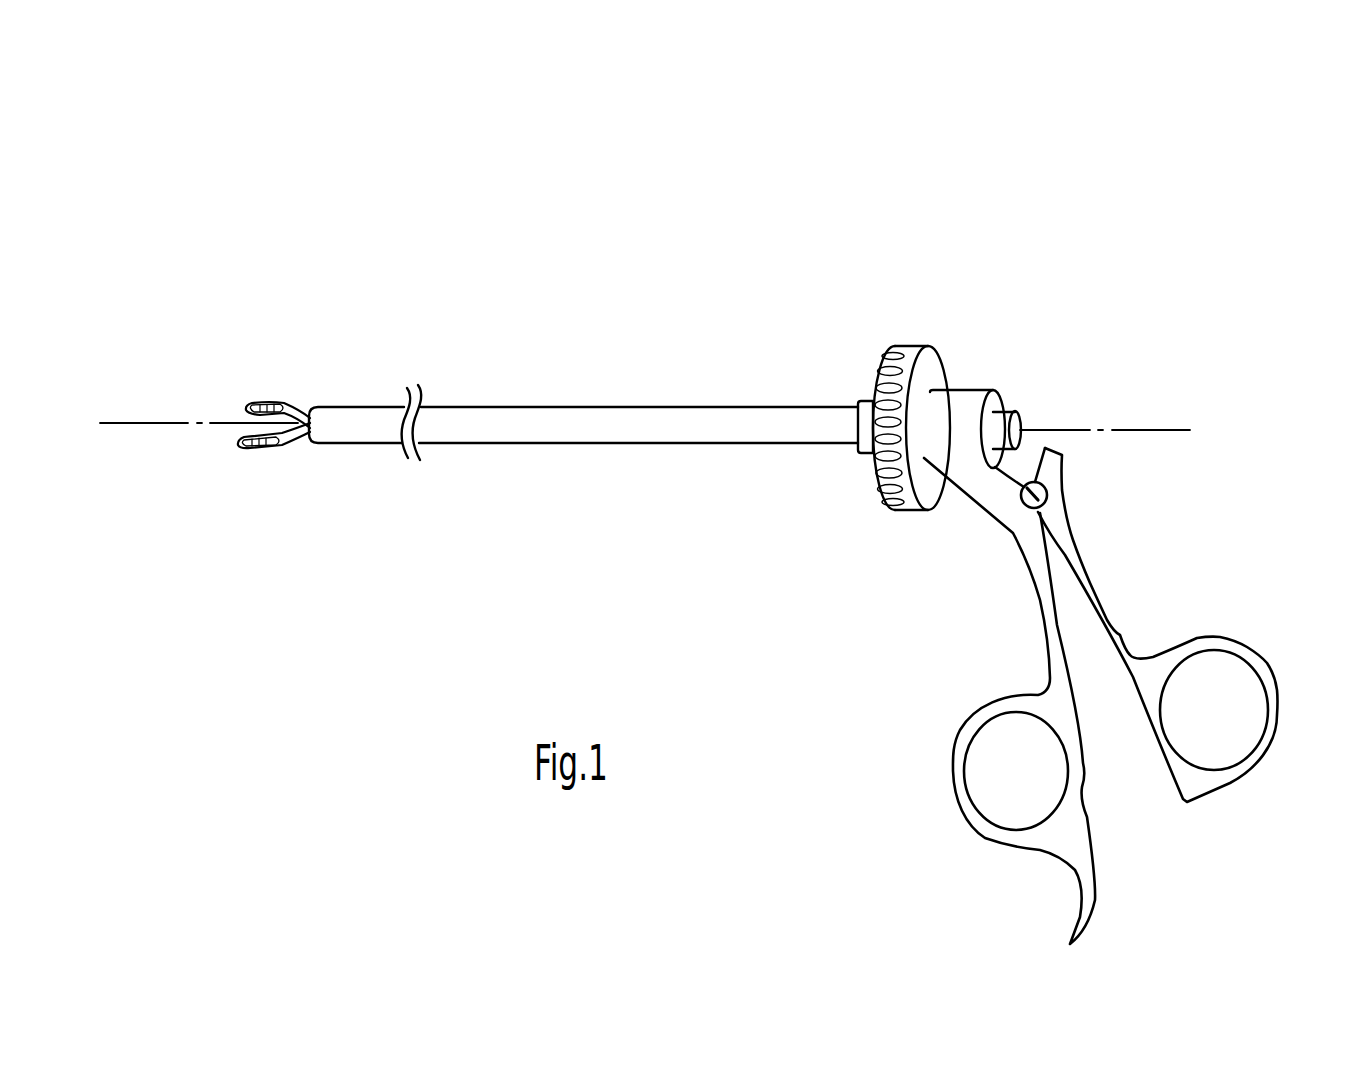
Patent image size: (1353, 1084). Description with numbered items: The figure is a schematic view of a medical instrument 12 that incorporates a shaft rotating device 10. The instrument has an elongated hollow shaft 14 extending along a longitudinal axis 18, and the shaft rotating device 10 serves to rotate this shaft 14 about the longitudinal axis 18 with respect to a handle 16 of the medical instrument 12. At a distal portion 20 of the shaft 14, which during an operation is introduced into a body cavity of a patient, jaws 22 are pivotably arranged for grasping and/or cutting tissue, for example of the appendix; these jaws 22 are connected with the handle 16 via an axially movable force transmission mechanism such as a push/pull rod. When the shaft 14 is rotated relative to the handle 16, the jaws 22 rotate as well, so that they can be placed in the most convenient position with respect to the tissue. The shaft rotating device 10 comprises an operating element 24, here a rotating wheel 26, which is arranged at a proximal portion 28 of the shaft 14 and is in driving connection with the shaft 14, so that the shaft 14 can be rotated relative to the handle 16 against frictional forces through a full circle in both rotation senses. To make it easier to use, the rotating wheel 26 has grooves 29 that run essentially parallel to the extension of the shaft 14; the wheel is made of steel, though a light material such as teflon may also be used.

The shaft rotating device 10 is at (910, 280).
The medical instrument 12 is at (462, 190).
The elongated hollow shaft 14 is at (552, 418).
The handle 16 is at (1083, 580).
The longitudinal axis 18 is at (152, 423).
The distal portion 20 is at (316, 438).
The jaws 22 is at (255, 402).
The operating element 24 is at (880, 338).
The rotating wheel 26 is at (928, 370).
The proximal portion 28 is at (843, 440).
The grooves 29 is at (887, 503).